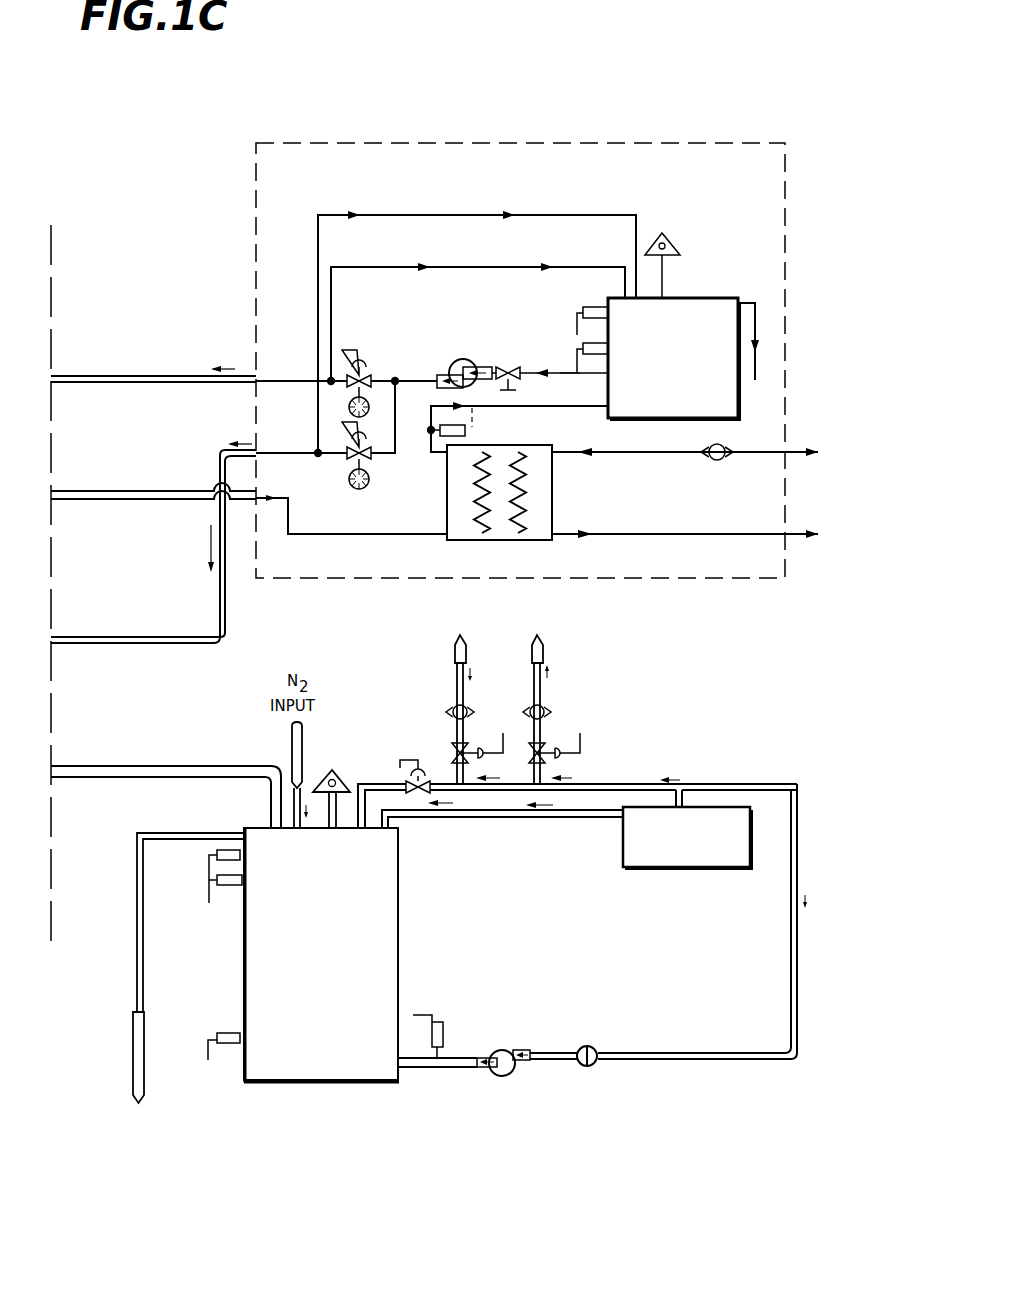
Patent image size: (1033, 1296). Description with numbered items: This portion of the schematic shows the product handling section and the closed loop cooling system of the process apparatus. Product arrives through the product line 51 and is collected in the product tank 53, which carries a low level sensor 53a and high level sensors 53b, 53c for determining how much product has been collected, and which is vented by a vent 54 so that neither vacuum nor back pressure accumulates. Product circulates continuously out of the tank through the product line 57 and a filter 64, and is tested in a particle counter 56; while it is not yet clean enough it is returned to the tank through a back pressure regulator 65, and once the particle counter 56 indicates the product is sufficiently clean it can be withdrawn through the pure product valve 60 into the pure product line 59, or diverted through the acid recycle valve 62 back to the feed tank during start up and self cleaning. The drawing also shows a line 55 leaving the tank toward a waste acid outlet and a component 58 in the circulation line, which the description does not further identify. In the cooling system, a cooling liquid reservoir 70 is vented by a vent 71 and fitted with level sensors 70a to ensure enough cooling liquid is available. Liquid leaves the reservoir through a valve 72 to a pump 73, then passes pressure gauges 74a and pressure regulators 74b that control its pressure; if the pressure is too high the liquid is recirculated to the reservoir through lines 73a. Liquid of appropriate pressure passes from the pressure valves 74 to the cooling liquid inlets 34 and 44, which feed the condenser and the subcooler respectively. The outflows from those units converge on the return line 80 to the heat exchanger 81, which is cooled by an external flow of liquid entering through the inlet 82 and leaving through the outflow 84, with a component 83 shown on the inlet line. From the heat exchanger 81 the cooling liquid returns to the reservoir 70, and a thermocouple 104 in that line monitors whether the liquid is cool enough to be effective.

The cooling liquid inlet 34 is at (108, 376).
The cooling liquid inlet 44 is at (100, 637).
The product line 51 is at (108, 766).
The product tank 53 is at (336, 964).
The low level sensor 53a is at (228, 1033).
The high level sensor 53b is at (230, 888).
The high level sensor 53c is at (222, 848).
The vent 54 is at (336, 770).
The waste acid drain line 55 is at (137, 897).
The particle counter 56 is at (623, 840).
The product line 57 is at (795, 988).
The recirculation pump 58 is at (492, 1050).
The pure product line 59 is at (588, 782).
The pure product valve 60 is at (542, 745).
The acid recycle valve 62 is at (455, 745).
The filter 64 is at (595, 1046).
The back pressure regulator 65 is at (407, 780).
The cooling liquid reservoir 70 is at (700, 298).
The level sensors 70a is at (596, 343).
The vent 71 is at (672, 240).
The valve 72 is at (513, 362).
The pump 73 is at (458, 362).
The lines 73a is at (386, 214).
The pressure valves 74 is at (366, 376).
The pressure gauges 74a is at (349, 404).
The pressure regulators 74b is at (360, 352).
The return line 80 is at (272, 498).
The heat exchanger 81 is at (460, 490).
The inlet 82 is at (622, 455).
The water inlet valve 83 is at (710, 447).
The outflow 84 is at (680, 533).
The thermocouple 104 is at (468, 433).